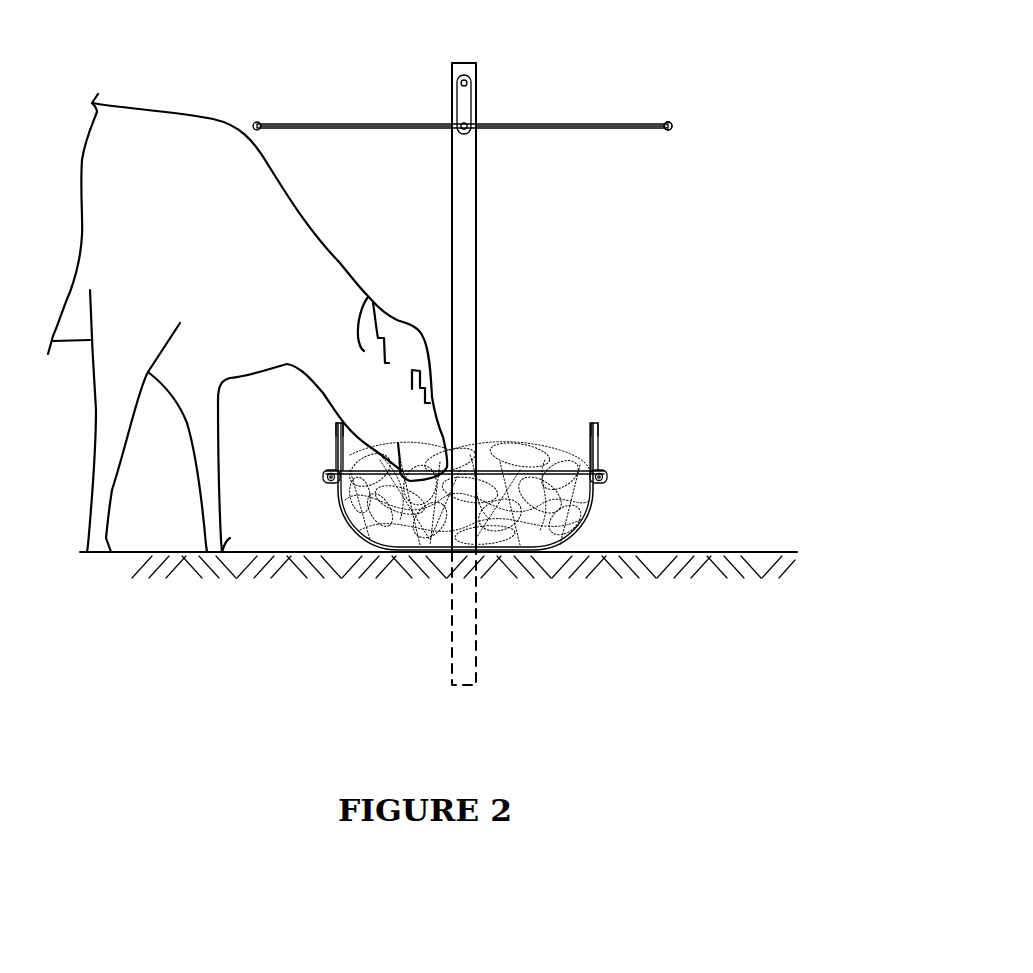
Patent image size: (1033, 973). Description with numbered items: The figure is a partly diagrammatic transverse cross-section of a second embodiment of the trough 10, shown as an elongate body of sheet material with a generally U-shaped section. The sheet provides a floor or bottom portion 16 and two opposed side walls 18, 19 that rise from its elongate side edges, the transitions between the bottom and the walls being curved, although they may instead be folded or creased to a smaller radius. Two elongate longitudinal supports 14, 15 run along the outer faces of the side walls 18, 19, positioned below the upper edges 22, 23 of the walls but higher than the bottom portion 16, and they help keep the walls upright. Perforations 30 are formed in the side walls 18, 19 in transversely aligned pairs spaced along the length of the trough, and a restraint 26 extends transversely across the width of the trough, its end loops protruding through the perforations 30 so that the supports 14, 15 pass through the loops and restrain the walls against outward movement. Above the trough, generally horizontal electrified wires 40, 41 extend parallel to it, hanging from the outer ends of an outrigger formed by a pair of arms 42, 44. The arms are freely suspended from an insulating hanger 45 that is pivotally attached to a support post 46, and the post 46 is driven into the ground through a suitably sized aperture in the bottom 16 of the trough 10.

The trough 10 is at (663, 455).
The longitudinal support 14 is at (326, 477).
The longitudinal support 15 is at (607, 477).
The floor or bottom portion 16 is at (530, 552).
The trough side wall 18 is at (336, 445).
The trough side wall 19 is at (596, 432).
The upper edge 22 is at (337, 423).
The upper edge 23 is at (594, 423).
The restraint 26 is at (527, 465).
The perforation 30 is at (333, 487).
The electrified wire 40 is at (257, 121).
The electrified wire 41 is at (669, 122).
The outrigger arm 42 is at (556, 123).
The outrigger arm 44 is at (310, 123).
The insulating hanger 45 is at (464, 107).
The support post 46 is at (477, 218).